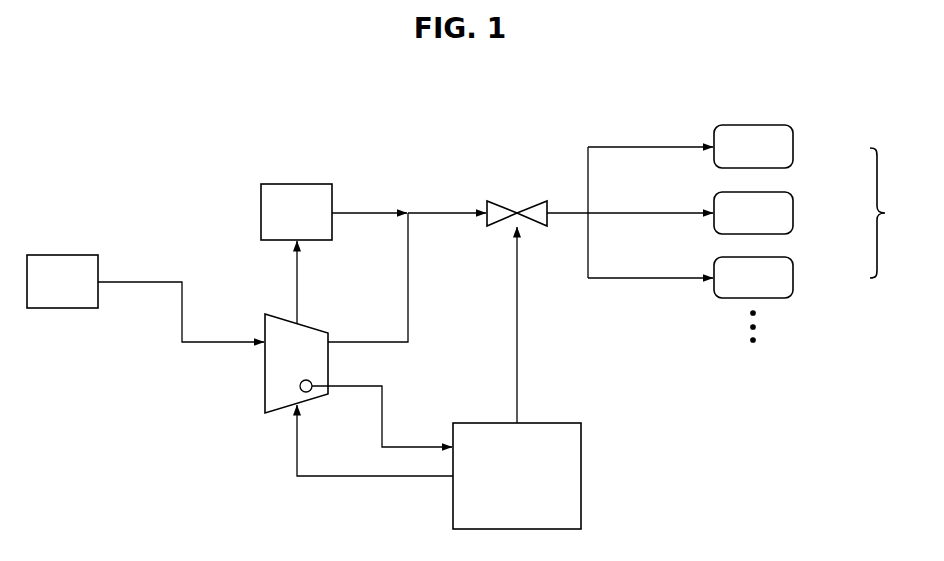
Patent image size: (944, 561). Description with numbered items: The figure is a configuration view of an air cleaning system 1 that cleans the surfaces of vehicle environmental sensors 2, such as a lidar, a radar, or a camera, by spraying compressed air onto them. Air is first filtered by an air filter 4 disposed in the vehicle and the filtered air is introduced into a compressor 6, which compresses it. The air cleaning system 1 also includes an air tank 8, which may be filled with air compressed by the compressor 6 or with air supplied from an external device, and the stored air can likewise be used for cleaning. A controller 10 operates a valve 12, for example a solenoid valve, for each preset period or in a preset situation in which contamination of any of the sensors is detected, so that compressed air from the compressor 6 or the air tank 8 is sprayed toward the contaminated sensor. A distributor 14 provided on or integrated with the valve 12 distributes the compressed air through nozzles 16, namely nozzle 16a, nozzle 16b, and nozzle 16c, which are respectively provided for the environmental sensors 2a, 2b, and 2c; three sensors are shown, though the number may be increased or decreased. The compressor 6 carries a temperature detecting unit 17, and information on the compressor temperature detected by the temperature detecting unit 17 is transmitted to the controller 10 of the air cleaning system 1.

The air cleaning system 1 is at (817, 106).
The environmental sensors 2 is at (884, 213).
The environmental sensor 2a is at (793, 147).
The environmental sensor 2b is at (793, 213).
The environmental sensor 2c is at (793, 278).
The air filter 4 is at (60, 255).
The compressor 6 is at (265, 384).
The air tank 8 is at (296, 184).
The controller 10 is at (581, 476).
The valve 12 is at (500, 201).
The distributor 14 is at (588, 172).
The nozzles 16 is at (650, 187).
The nozzle 16a is at (650, 118).
The nozzle 16b is at (650, 184).
The nozzle 16c is at (650, 250).
The temperature detecting unit 17 is at (298, 386).